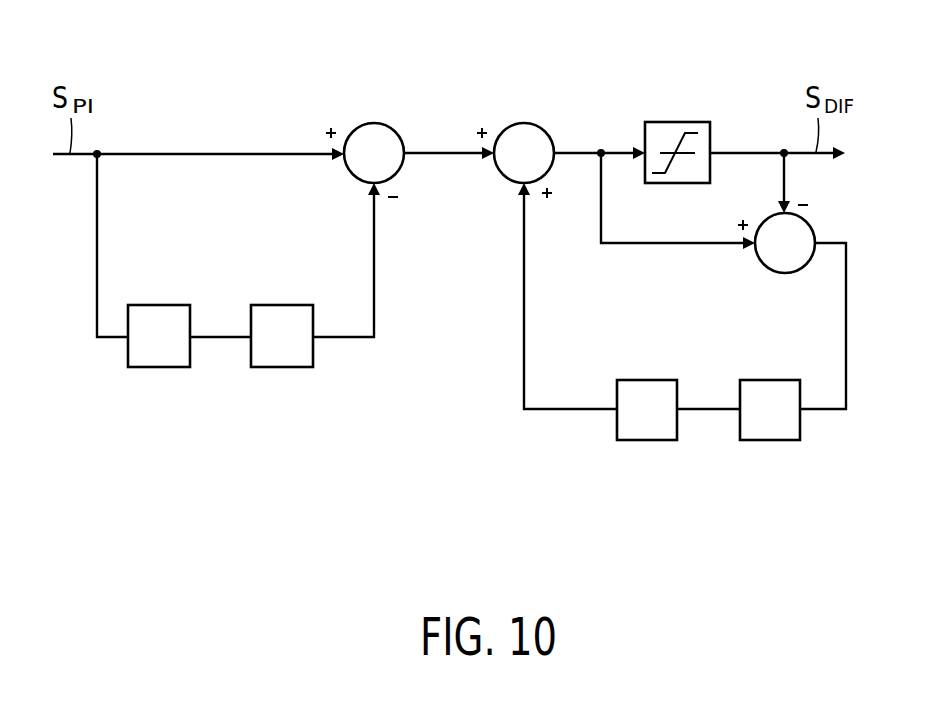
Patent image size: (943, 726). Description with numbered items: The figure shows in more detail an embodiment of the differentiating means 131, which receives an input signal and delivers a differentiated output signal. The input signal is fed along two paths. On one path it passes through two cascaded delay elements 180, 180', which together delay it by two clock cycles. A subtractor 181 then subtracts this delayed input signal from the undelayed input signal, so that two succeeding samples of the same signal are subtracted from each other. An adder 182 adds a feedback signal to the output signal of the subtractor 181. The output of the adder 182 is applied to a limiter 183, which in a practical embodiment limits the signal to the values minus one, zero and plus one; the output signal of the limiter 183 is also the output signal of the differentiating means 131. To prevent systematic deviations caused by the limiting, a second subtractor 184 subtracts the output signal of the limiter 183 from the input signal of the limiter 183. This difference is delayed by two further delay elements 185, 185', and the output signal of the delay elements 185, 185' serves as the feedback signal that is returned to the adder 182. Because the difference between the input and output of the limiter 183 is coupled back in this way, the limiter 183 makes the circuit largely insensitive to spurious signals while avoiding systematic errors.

The differentiating means 131 is at (268, 518).
The delay element 180 is at (159, 375).
The delay element 180' is at (282, 375).
The subtractor 181 is at (374, 123).
The adder 182 is at (524, 123).
The limiter 183 is at (676, 122).
The subtractor 184 is at (786, 273).
The delay element 185 is at (647, 448).
The delay element 185' is at (770, 448).